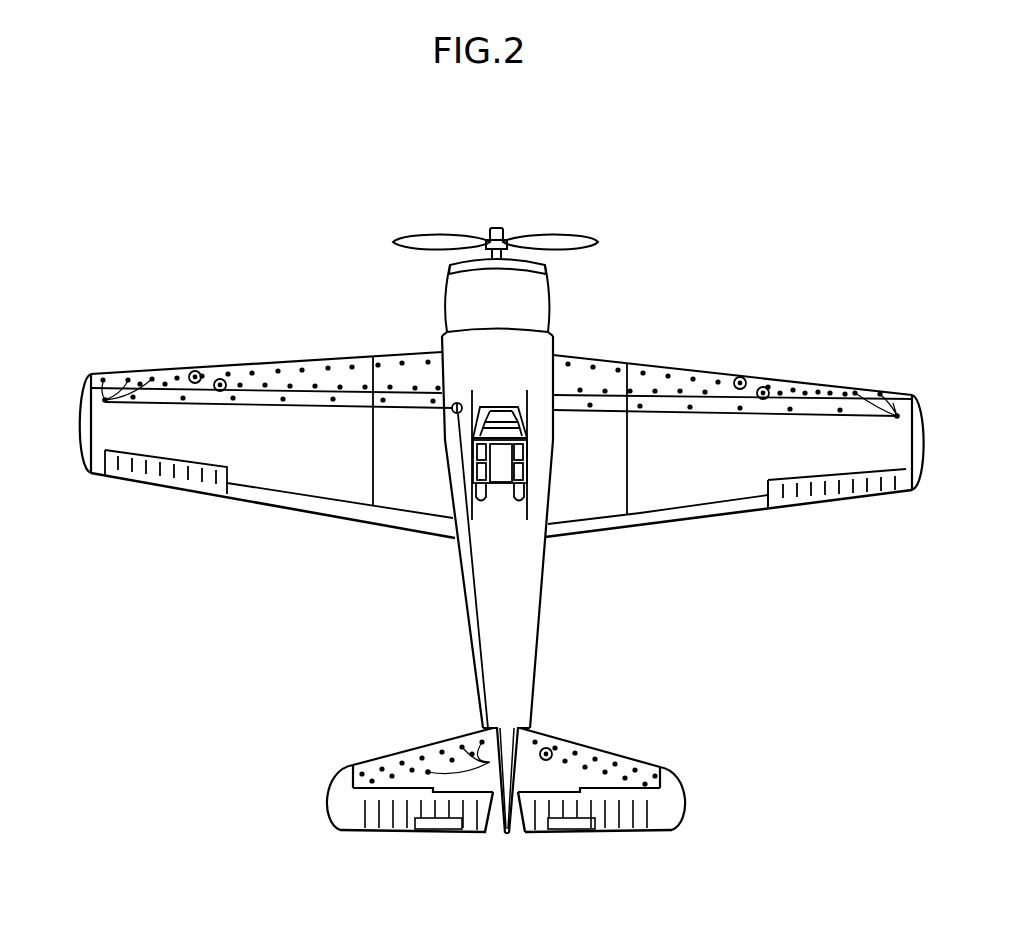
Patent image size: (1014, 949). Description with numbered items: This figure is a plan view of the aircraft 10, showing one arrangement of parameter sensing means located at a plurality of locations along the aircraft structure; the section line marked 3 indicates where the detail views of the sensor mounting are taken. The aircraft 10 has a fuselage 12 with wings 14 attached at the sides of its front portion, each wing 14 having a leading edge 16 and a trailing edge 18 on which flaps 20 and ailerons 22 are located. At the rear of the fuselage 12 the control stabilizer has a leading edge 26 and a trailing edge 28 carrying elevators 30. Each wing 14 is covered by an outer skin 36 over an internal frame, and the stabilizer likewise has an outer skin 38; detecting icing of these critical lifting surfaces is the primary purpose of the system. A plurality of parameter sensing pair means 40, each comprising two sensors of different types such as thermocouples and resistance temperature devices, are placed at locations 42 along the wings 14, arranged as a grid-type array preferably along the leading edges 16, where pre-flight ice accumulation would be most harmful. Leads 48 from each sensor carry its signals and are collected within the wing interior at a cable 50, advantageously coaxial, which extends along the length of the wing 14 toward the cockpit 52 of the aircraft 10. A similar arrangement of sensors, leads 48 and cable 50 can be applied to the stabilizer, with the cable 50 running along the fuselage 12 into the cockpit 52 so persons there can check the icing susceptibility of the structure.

The aircraft 10 is at (636, 246).
The fuselage 12 is at (531, 643).
The wings 14 is at (319, 462).
The leading edge 16 is at (721, 347).
The trailing edge 18 is at (787, 555).
The flaps 20 is at (320, 508).
The ailerons 22 is at (183, 478).
The leading edge 26 is at (426, 733).
The trailing edge 28 is at (428, 842).
The elevators 30 is at (345, 826).
The outer skin 36 is at (323, 412).
The outer skin 38 is at (397, 752).
The parameter sensing pair means 40 is at (240, 372).
The locations 42 is at (196, 383).
The leads 48 is at (118, 378).
The cable 50 is at (186, 403).
The cockpit 52 is at (499, 411).
The section line 3- 3 is at (245, 297).